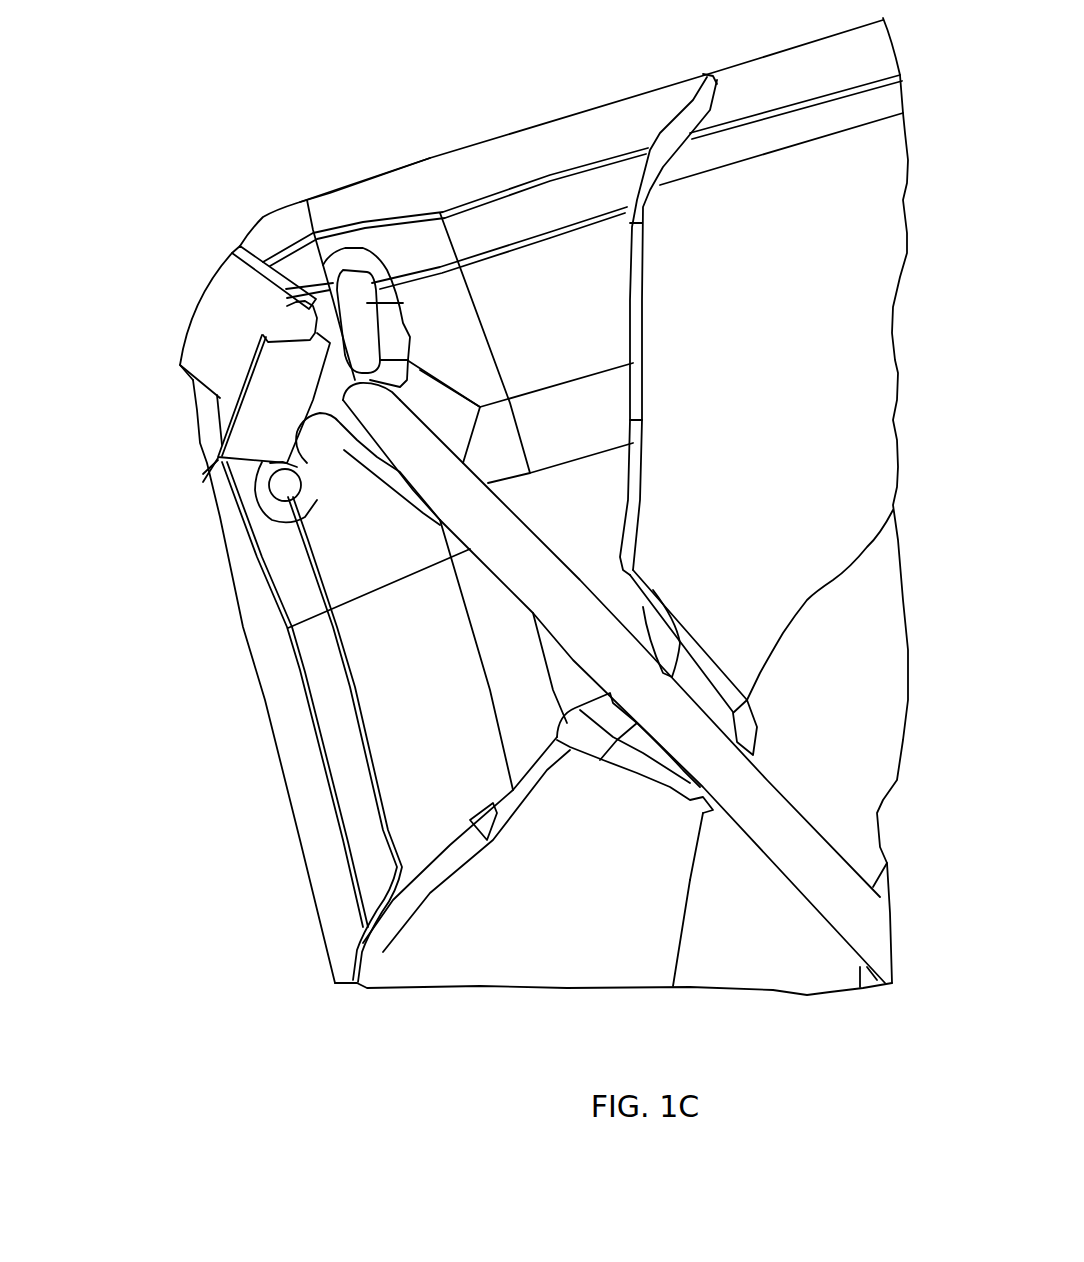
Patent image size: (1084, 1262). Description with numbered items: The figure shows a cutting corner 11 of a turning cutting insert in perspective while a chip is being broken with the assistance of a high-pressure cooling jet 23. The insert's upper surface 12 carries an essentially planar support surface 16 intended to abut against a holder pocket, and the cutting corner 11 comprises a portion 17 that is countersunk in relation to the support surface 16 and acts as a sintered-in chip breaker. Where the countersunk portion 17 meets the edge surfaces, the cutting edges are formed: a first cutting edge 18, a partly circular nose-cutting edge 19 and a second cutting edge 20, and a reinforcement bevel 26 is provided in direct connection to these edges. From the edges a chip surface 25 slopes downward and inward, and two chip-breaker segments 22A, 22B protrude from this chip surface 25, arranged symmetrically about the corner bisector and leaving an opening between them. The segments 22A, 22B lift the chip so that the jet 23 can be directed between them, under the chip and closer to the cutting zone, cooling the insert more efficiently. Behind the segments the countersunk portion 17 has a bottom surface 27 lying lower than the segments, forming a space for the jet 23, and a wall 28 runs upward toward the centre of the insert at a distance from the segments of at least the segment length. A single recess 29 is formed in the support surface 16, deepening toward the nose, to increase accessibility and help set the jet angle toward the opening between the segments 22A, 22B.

The cutting corner 11 is at (352, 125).
The upper surface 12 is at (512, 946).
The support surface 16 is at (772, 358).
The countersunk portion 17 is at (395, 681).
The first cutting edge 18 is at (433, 157).
The nose-cutting edge 19 is at (267, 227).
The second cutting edge 20 is at (262, 677).
The chip-breaker segment 22A is at (353, 287).
The chip-breaker segment 22B is at (297, 468).
The high-pressure cooling jet 23 is at (808, 870).
The chip surface 25 is at (403, 797).
The reinforcement bevel 26 is at (230, 547).
The bottom surface 27 is at (590, 513).
The wall 28 is at (637, 377).
The recess 29 is at (693, 673).